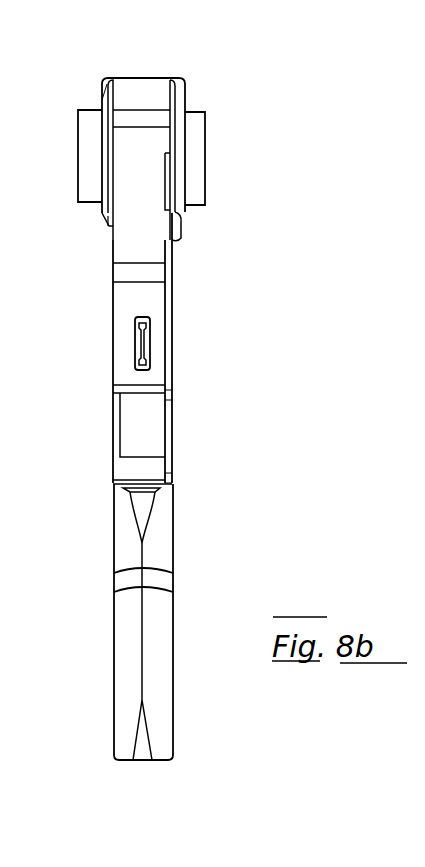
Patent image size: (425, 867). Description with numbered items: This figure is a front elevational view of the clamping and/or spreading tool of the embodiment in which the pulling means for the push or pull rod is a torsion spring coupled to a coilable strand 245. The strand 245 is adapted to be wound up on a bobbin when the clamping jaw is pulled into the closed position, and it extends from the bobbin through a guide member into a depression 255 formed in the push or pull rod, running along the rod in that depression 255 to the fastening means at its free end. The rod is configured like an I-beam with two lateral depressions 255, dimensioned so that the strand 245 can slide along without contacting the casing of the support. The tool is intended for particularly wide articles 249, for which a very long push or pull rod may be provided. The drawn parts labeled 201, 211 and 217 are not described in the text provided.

The connector device 201 is at (206, 436).
The cap / head portion 211 is at (142, 90).
The particularly wide articles 249 is at (198, 174).
The coilable strand 245 is at (150, 337).
The depression 255 is at (150, 325).
The lower tube / shaft 217 is at (130, 677).